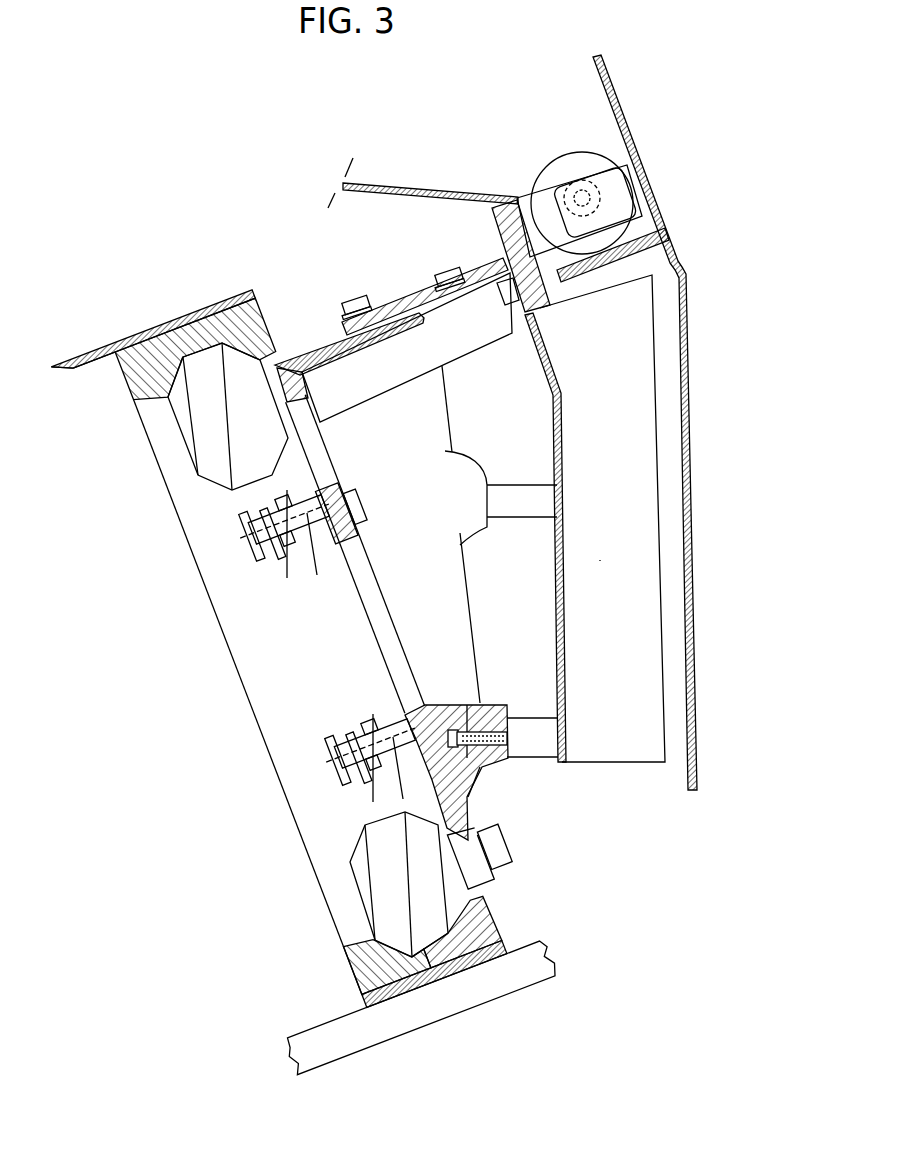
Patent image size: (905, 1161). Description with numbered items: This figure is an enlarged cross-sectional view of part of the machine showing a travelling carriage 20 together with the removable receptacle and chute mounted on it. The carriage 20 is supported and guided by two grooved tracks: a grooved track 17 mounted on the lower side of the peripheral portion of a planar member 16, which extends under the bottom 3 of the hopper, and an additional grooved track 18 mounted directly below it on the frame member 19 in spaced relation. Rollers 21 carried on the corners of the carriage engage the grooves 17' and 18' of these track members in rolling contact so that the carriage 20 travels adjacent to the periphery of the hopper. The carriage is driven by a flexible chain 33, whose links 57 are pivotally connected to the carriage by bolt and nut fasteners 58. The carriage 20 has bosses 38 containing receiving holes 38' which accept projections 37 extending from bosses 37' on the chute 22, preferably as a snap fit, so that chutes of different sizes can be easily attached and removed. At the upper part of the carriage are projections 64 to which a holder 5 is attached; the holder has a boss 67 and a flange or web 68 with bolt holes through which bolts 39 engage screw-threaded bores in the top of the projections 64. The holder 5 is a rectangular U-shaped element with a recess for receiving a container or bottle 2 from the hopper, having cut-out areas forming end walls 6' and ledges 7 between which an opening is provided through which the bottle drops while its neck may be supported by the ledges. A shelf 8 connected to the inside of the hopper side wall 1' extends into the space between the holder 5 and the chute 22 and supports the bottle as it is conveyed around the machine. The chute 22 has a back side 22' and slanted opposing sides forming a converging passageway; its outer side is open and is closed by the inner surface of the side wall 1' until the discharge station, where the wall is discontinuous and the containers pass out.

The side wall 1' is at (645, 422).
The container or bottle 2 is at (570, 164).
The bottom of the hopper 3 is at (430, 186).
The holder 5 is at (518, 198).
The end wall 6' is at (608, 203).
The ledge 7 is at (628, 212).
The shelf or ledge 8 is at (665, 232).
The planar member 16 is at (137, 340).
The grooved track 17 is at (153, 307).
The groove 17' is at (211, 340).
The additional grooved track 18 is at (425, 1018).
The groove 18' is at (485, 931).
The frame member 19 is at (497, 990).
The carriage 20 is at (345, 637).
The roller 21 is at (178, 410).
The chute 22 is at (654, 518).
The back side 22' is at (580, 537).
The flexible belt or chain 33 is at (258, 548).
The projection 37 is at (513, 765).
The boss 37' is at (522, 591).
The boss 38 is at (486, 637).
The receiving hole 38' is at (456, 737).
The bolt 39 is at (358, 297).
The link 57 is at (294, 556).
The bolt and nut fastener 58 is at (290, 512).
The projection 64 is at (394, 368).
The boss 67 is at (510, 306).
The flange or web 68 is at (403, 300).